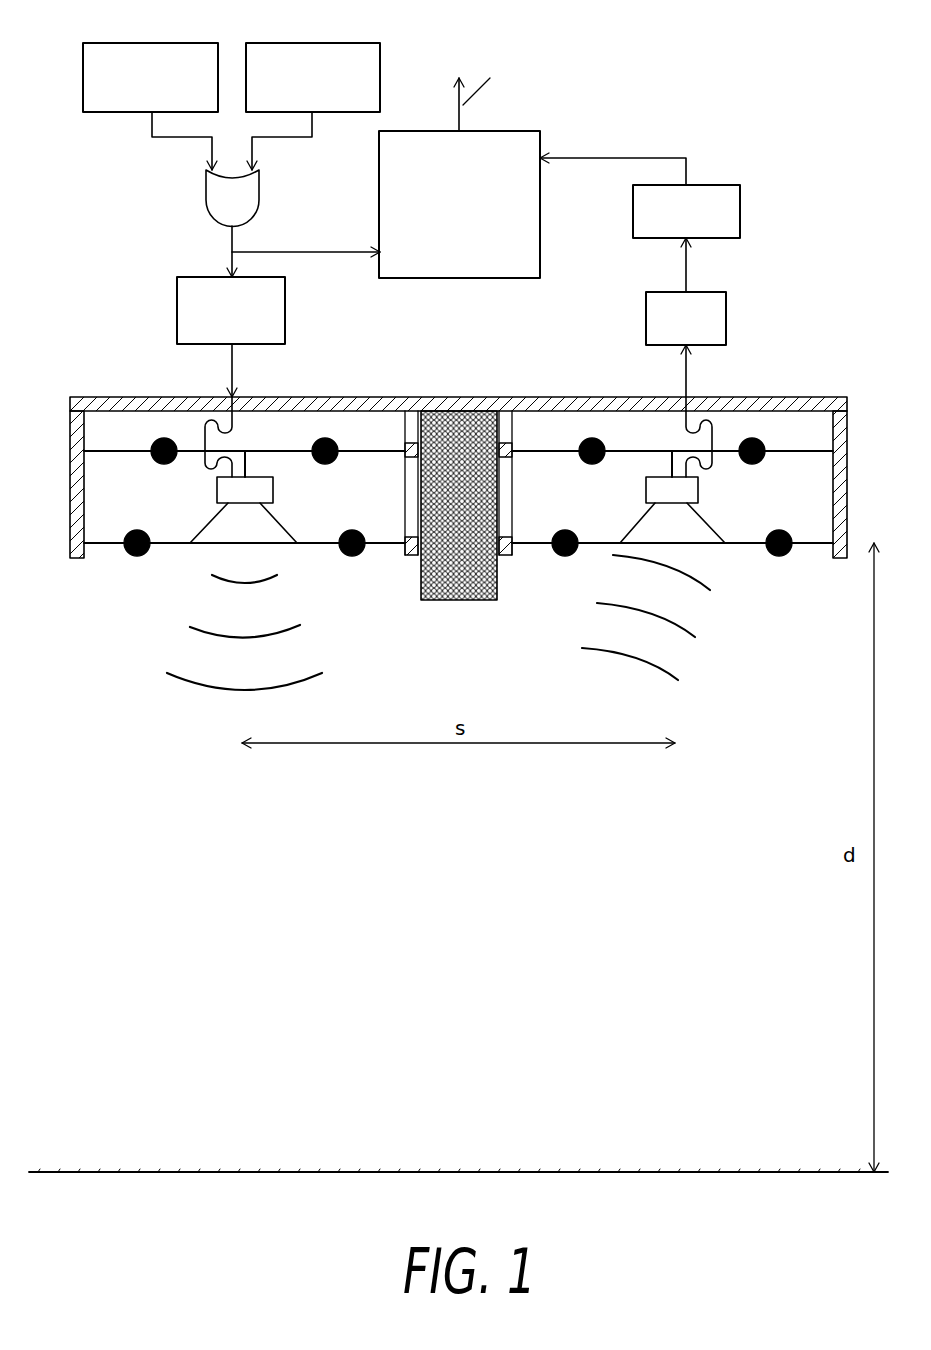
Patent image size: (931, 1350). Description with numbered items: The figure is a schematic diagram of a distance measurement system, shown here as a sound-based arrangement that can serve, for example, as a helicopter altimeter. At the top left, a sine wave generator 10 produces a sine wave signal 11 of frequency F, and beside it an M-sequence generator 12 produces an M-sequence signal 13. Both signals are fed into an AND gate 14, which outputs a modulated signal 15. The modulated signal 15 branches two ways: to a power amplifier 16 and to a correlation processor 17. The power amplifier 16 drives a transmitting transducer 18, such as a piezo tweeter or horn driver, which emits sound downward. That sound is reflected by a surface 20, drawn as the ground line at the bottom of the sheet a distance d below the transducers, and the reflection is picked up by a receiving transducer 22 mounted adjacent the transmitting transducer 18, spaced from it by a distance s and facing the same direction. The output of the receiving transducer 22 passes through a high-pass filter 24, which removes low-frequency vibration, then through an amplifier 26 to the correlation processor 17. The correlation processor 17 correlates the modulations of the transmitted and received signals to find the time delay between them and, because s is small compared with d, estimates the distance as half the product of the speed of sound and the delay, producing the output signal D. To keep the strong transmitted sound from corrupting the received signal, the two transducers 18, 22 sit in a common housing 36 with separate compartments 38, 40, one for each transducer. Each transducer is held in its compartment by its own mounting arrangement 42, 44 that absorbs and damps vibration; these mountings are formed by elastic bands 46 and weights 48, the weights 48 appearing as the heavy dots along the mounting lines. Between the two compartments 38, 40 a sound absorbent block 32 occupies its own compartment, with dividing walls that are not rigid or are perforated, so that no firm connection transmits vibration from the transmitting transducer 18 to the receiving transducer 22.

The sine wave generator 10 is at (88, 43).
The M-sequence generator 12 is at (353, 43).
The sine wave signal 11 is at (165, 138).
The M-sequence signal 13 is at (272, 138).
The AND gate 14 is at (203, 200).
The modulated signal 15 is at (273, 250).
The power amplifier 16 is at (175, 317).
The correlation processor 17 is at (458, 278).
The amplifier 26 is at (743, 212).
The filter 24 is at (728, 318).
The common housing 36 is at (390, 397).
The compartment 38 is at (85, 532).
The compartment 40 is at (833, 532).
The mounting arrangement 42 is at (185, 433).
The mounting arrangement 44 is at (727, 440).
The elastic bands 46 is at (537, 448).
The sound absorbent block 32 is at (475, 600).
The weights 48 is at (352, 557).
The transmitting transducer 18 is at (277, 517).
The receiving transducer 22 is at (637, 523).
The surface 20 is at (216, 1172).